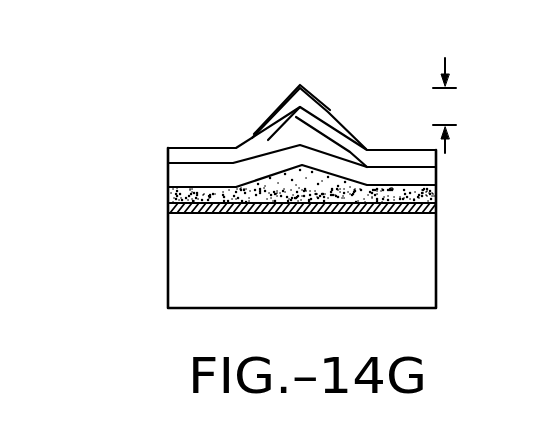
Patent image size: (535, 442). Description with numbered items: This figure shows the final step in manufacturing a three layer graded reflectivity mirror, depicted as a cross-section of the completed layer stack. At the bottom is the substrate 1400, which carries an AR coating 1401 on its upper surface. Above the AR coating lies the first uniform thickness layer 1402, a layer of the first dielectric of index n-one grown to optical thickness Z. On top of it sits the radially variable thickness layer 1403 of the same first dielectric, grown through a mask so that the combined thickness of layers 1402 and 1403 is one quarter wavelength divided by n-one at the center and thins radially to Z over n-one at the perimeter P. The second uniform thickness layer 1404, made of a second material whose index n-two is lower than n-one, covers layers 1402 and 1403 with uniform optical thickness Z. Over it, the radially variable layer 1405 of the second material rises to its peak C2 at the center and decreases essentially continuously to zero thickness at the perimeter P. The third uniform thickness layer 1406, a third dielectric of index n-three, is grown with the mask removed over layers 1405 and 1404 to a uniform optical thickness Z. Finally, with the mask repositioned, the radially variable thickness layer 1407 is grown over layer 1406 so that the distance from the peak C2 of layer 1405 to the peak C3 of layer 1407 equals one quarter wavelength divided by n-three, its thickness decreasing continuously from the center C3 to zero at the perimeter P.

The substrate 1400 is at (302, 228).
The AR coating 1401 is at (168, 208).
The first uniform thickness layer 1402 is at (167, 192).
The radially variable thickness layer 1403 is at (262, 172).
The second uniform thickness layer 1404 is at (252, 138).
The radially variable layer 1405 is at (268, 140).
The third uniform thickness layer 1406 is at (267, 118).
The radially variable thickness layer 1407 is at (278, 102).
The peak of layer 1405 C2 is at (327, 112).
The peak of layer 1407 C3 is at (300, 87).
The perimeter P is at (367, 147).